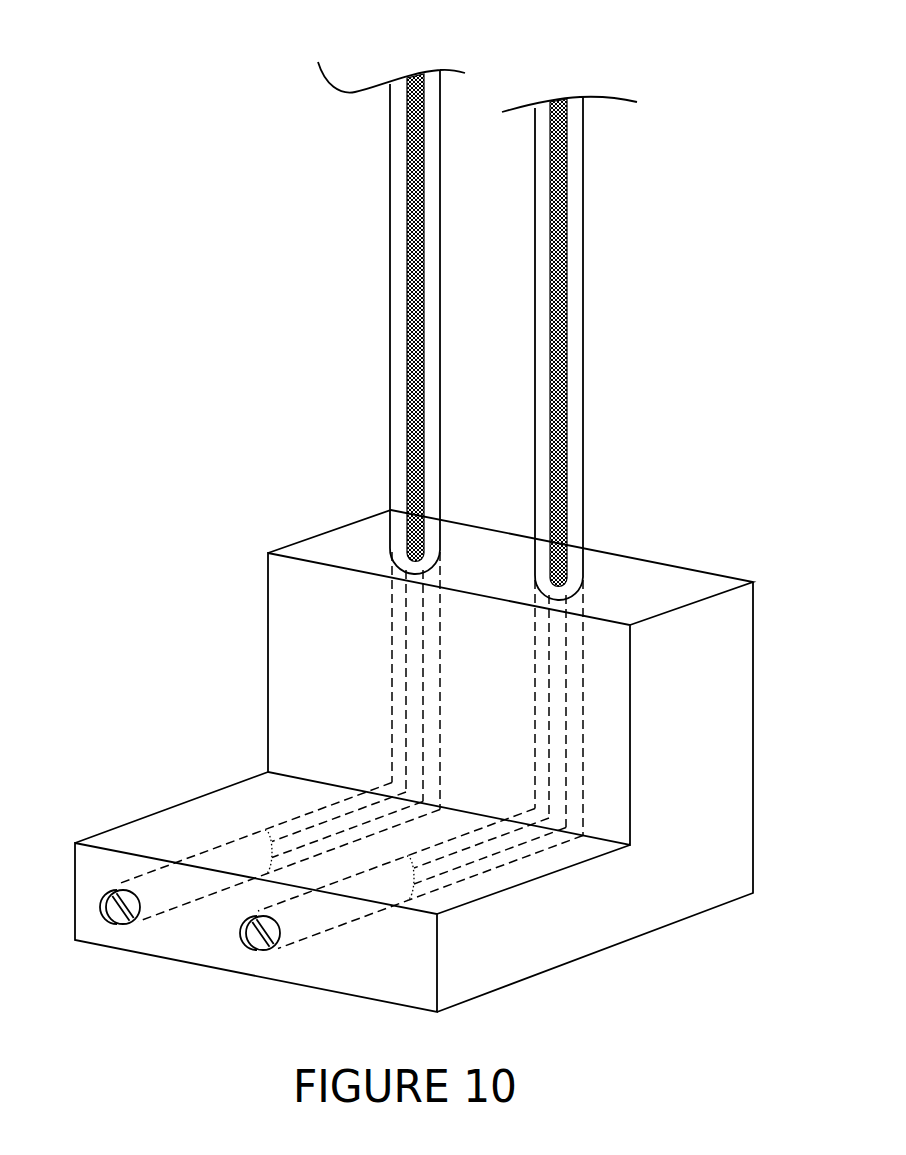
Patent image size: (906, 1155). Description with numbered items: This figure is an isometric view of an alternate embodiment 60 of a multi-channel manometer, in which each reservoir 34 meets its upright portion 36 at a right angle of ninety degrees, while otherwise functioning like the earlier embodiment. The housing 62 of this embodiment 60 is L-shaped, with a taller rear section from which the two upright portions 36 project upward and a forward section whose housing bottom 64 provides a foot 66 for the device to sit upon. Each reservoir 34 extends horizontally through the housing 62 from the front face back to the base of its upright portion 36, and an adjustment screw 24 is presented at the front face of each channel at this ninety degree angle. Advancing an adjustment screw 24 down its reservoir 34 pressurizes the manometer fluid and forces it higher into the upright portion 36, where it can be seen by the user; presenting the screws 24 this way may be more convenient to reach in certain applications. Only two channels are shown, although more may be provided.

The alternate embodiment 60 is at (118, 126).
The housing 62 is at (753, 765).
The housing bottom 64 is at (580, 960).
The foot 66 is at (352, 892).
The upright portion 36 is at (390, 440).
The reservoir 34 is at (307, 808).
The adjustment screw 24 is at (110, 928).